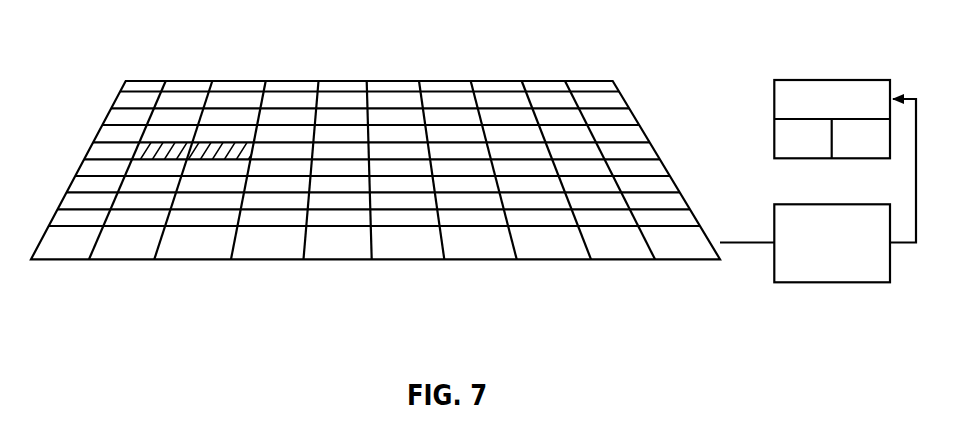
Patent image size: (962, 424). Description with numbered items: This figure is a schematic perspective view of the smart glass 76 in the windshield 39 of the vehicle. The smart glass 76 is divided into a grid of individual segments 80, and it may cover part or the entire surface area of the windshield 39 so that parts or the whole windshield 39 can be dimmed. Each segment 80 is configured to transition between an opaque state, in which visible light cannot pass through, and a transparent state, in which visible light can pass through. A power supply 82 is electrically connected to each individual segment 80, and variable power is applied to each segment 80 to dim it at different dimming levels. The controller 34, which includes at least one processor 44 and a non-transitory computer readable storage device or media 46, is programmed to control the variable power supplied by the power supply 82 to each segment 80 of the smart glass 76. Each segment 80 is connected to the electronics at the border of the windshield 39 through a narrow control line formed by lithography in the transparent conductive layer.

The controller 34 is at (832, 85).
The windshield 39 is at (402, 169).
The processor 44 is at (790, 150).
The computer readable storage device or media 46 is at (846, 150).
The smart glass 76 is at (645, 130).
The segment 80 is at (237, 87).
The power supply 82 is at (830, 283).